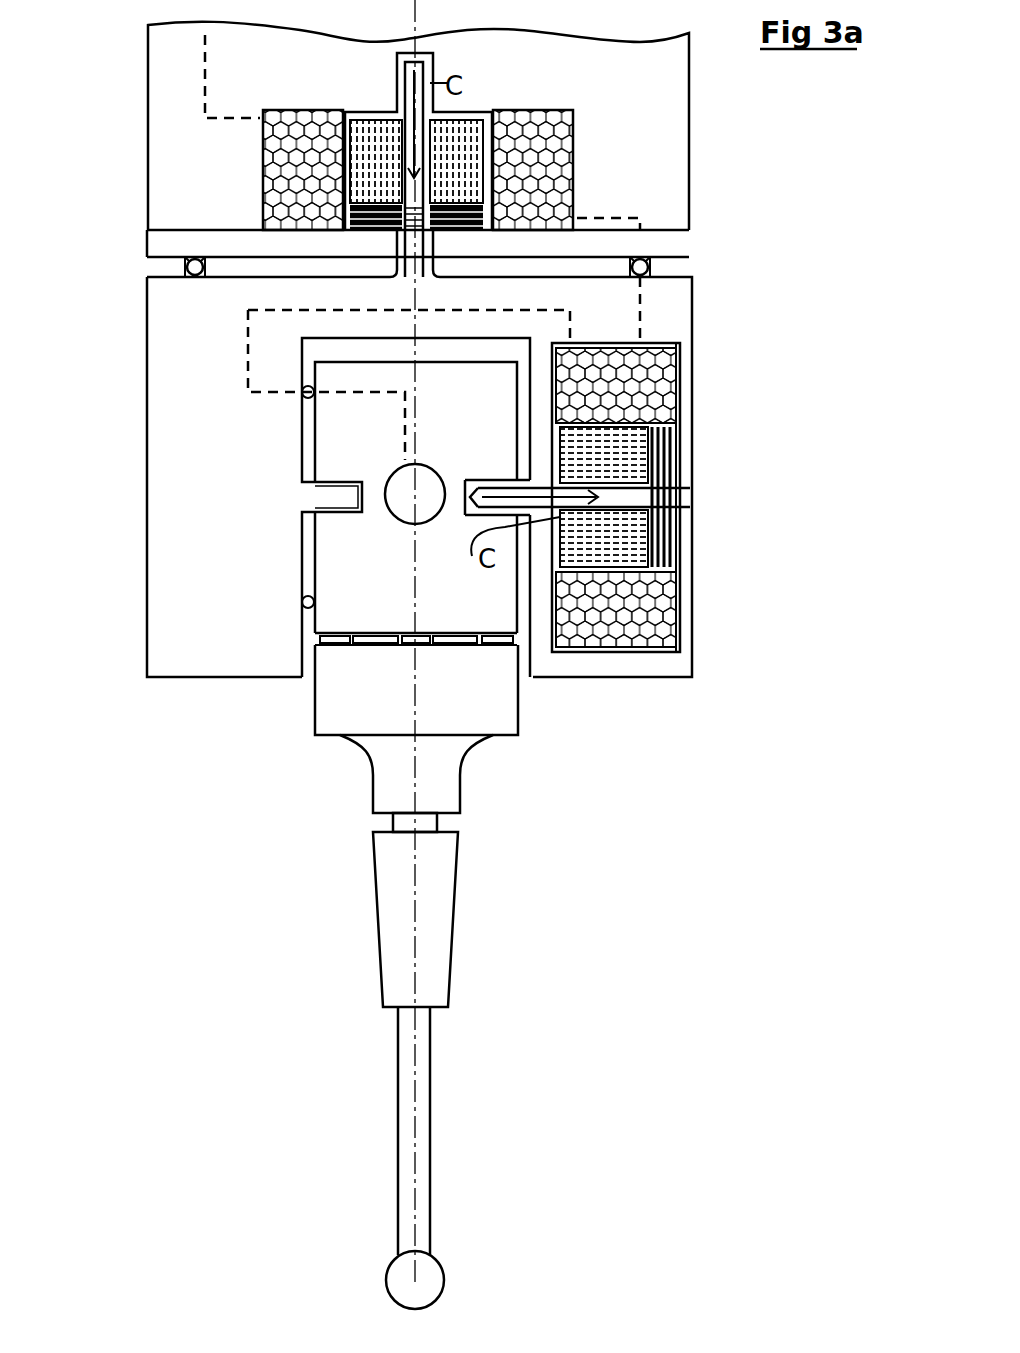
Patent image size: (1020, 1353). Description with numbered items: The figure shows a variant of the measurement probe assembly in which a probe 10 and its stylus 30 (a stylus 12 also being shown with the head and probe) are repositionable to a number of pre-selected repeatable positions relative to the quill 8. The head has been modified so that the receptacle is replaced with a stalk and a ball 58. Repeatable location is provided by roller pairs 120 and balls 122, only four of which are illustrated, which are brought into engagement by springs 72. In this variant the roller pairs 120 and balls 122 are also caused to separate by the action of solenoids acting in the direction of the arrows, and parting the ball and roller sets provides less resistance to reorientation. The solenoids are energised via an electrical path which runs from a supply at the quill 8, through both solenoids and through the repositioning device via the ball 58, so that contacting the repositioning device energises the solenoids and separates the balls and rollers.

The quill 8 is at (632, 147).
The probe 10 is at (500, 700).
The stylus 12 is at (683, 680).
The stylus 30 is at (442, 943).
The ball 58 is at (402, 503).
The springs 72 is at (377, 233).
The roller pairs 120 is at (190, 259).
The balls 122 is at (197, 277).